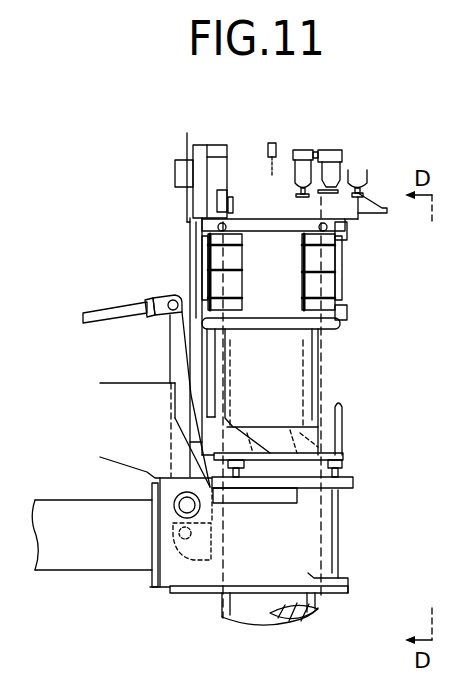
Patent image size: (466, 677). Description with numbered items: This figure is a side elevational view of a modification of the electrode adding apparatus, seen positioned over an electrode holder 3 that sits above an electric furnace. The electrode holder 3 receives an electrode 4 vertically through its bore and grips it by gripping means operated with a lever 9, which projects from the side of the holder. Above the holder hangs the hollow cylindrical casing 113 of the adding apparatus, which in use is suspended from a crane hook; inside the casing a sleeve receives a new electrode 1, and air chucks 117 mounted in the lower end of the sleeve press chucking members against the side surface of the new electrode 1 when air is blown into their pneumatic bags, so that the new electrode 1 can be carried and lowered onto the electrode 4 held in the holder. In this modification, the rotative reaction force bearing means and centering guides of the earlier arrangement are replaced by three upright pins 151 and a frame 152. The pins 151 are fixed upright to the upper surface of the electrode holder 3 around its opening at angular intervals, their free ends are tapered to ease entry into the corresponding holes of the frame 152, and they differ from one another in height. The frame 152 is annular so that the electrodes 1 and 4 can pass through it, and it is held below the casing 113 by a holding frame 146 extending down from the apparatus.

The new electrode 1 is at (310, 361).
The electrode holder 3 is at (332, 547).
The electrode 4 is at (318, 609).
The lever 9 is at (177, 352).
The hollow cylindrical casing 113 is at (345, 218).
The air chuck 117 is at (340, 292).
The holding frame 146 is at (193, 254).
The upright pins 151 is at (240, 426).
The frame 152 is at (343, 457).